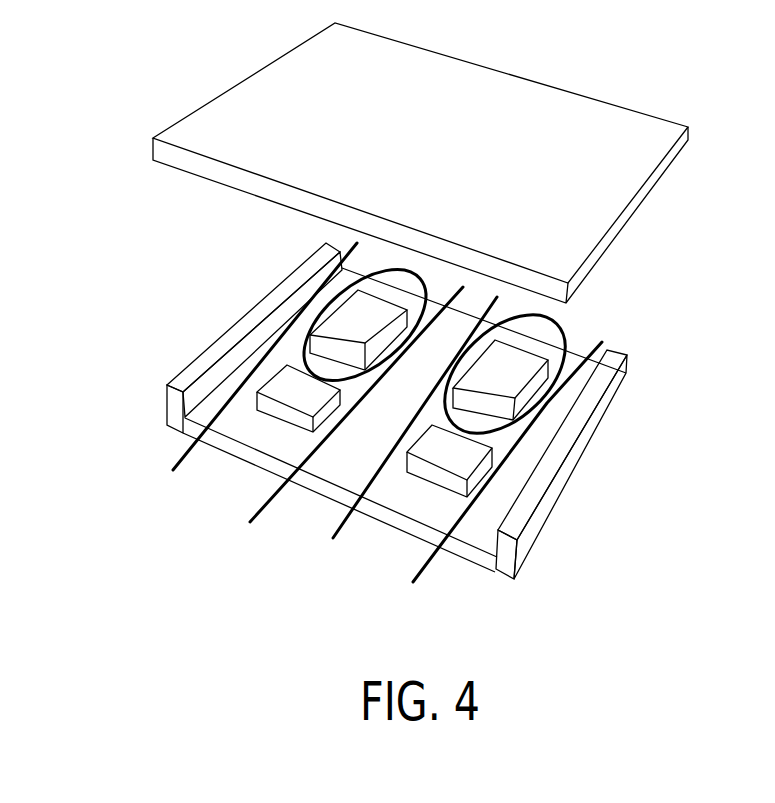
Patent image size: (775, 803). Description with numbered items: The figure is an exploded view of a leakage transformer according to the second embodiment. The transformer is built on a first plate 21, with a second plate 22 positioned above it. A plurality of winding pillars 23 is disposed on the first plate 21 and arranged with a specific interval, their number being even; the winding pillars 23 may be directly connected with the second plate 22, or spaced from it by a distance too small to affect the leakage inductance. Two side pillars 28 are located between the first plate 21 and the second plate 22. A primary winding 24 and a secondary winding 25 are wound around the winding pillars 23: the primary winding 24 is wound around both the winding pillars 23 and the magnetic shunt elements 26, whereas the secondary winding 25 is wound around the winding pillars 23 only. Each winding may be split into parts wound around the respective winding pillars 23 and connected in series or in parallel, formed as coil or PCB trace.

The first plate 21 is at (468, 555).
The second plate 22 is at (556, 115).
The winding pillars 23 is at (353, 322).
The primary winding 24 is at (340, 522).
The secondary winding 25 is at (353, 252).
The magnetic shunt elements 26 is at (293, 388).
The side pillars 28 is at (190, 373).